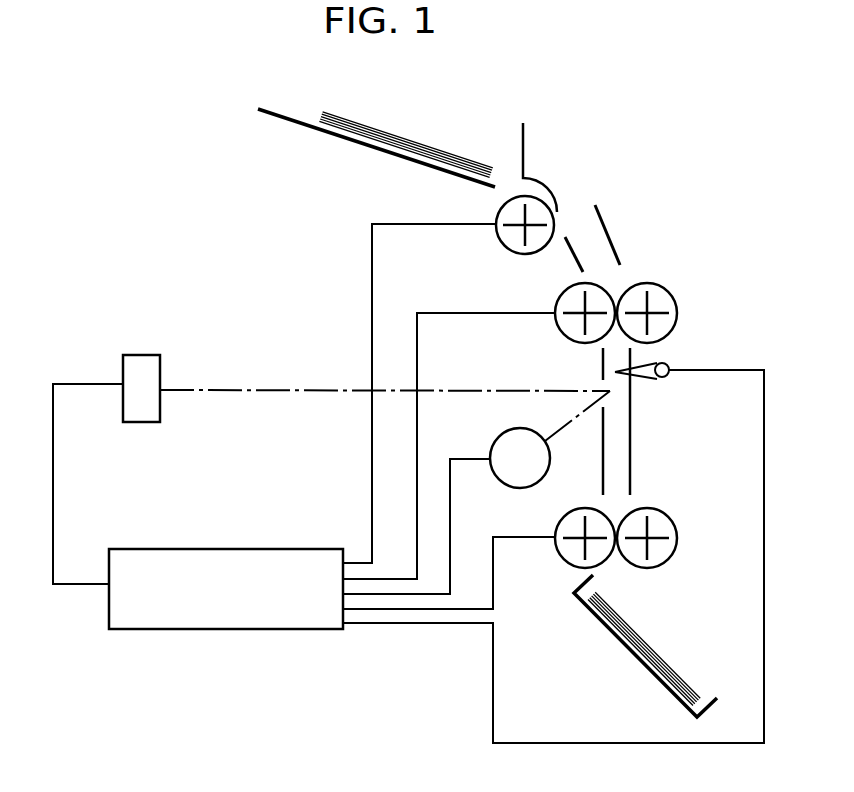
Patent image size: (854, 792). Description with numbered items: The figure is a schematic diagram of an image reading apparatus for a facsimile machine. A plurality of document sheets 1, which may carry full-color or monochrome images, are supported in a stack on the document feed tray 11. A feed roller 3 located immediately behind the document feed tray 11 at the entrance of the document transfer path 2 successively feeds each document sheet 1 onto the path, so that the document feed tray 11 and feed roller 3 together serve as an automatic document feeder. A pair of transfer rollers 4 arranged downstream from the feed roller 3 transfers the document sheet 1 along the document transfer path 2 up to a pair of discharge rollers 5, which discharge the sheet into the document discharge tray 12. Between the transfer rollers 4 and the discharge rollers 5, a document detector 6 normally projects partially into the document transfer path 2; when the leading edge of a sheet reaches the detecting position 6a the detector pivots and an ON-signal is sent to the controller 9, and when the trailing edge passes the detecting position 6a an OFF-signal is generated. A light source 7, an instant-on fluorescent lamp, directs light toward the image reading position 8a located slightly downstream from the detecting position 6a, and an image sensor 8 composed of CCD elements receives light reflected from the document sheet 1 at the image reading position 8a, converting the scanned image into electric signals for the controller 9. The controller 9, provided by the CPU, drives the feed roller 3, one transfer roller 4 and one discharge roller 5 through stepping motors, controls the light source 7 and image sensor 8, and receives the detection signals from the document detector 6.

The document sheets 1 is at (418, 138).
The document transfer path 2 is at (618, 215).
The feed roller 3 is at (533, 205).
The pair of transfer rollers 4 is at (595, 286).
The pair of discharge rollers 5 is at (596, 558).
The document detector 6 is at (670, 364).
The detecting position 6a is at (633, 403).
The light source 7 is at (489, 439).
The image sensor 8 is at (147, 375).
The image reading position 8a is at (616, 421).
The controller 9 is at (222, 629).
The document feed tray 11 is at (288, 120).
The document discharge tray 12 is at (637, 658).